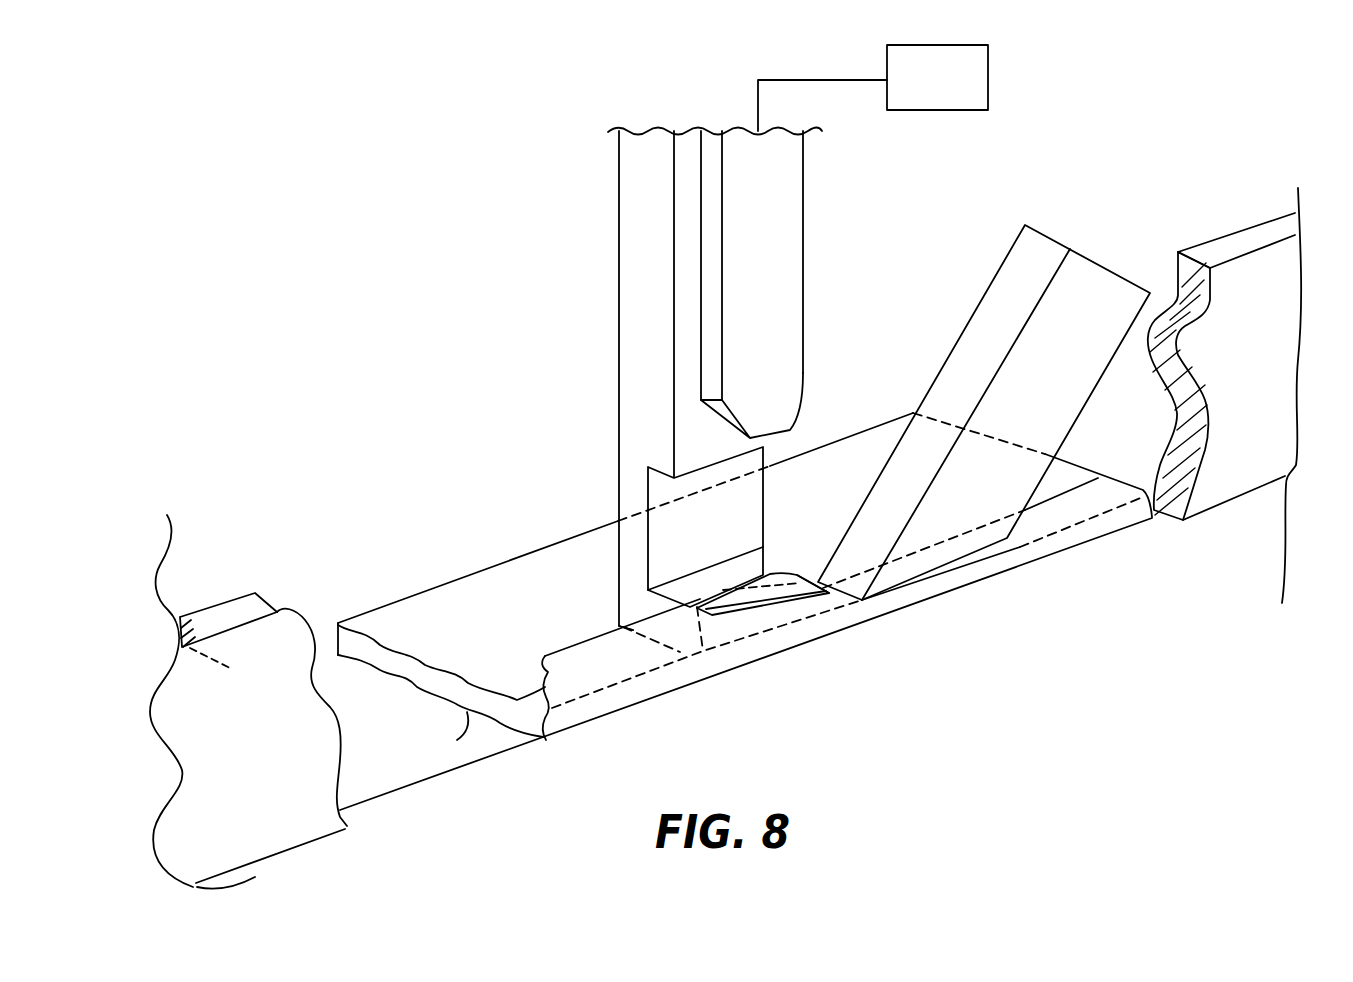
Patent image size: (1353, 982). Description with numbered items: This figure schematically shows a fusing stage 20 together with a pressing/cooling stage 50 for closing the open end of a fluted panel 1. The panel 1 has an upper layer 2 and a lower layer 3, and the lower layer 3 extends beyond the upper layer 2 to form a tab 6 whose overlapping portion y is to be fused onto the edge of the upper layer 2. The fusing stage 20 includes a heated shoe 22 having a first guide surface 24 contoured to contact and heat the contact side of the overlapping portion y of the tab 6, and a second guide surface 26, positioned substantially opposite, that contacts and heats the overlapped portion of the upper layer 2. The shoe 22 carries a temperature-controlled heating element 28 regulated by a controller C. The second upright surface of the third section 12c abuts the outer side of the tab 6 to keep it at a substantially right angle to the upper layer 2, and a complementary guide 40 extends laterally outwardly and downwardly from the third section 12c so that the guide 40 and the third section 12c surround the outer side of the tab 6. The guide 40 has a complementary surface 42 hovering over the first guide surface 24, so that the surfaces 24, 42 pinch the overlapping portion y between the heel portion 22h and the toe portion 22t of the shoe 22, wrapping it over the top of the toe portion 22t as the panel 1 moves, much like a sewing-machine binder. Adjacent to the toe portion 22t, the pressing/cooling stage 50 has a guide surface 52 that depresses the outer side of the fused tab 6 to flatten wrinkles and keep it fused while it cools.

The panel 1 is at (488, 566).
The upper layer 2 is at (453, 672).
The lower layer 3 is at (450, 739).
The tab 6 is at (533, 697).
The third section 12c is at (1175, 266).
The fusing stage 20 is at (592, 174).
The heated shoe 22 is at (758, 510).
The heel portion 22h is at (642, 610).
The toe portion 22t is at (827, 603).
The first guide surface 24 is at (700, 598).
The second guide surface 26 is at (673, 655).
The heating element 28 is at (752, 284).
The complementary guide 40 is at (778, 622).
The complementary surface 42 is at (740, 615).
The pressing/cooling stage 50 is at (973, 280).
The guide surface 52 is at (925, 580).
The overlapping portion y is at (567, 678).
The controller C is at (947, 93).